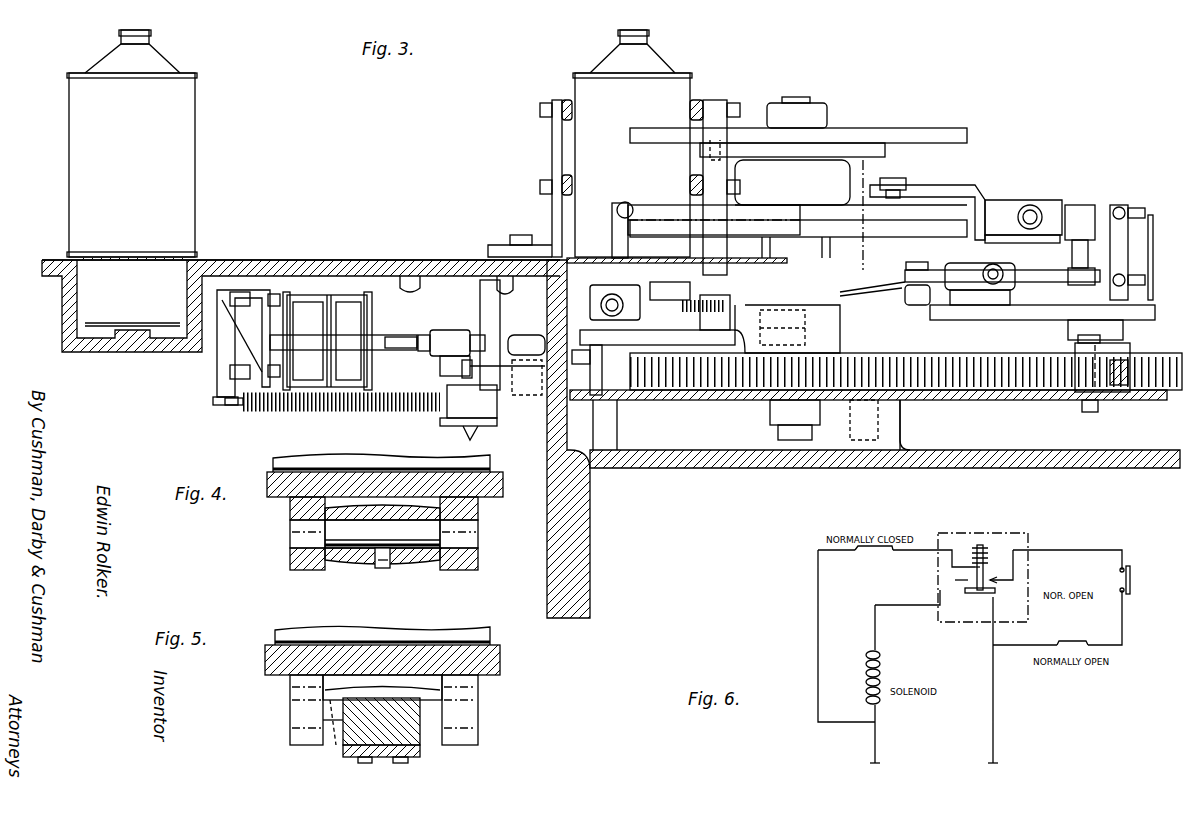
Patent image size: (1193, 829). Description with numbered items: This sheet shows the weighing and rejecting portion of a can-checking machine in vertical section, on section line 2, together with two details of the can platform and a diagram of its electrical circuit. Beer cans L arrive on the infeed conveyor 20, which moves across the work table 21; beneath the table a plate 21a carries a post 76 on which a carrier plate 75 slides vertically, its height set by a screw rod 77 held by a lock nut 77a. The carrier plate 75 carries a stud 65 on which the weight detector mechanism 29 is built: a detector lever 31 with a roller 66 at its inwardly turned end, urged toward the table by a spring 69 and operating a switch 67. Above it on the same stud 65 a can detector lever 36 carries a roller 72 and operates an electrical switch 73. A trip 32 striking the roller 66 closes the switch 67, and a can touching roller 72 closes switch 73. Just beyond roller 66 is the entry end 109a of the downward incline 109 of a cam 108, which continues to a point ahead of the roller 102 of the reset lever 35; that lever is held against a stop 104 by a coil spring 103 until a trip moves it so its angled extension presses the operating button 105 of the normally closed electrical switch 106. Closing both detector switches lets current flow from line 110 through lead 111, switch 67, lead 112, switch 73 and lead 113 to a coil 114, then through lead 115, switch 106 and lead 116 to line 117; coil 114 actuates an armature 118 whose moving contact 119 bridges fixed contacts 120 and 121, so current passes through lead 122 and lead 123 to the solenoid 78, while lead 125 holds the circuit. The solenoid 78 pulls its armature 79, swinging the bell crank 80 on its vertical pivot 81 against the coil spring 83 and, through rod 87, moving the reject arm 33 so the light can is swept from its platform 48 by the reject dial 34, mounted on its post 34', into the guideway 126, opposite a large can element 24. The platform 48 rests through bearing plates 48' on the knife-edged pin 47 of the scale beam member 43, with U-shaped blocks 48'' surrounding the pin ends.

In FIG. 3, the infeed conveyor 20 is at (165, 262).
In FIG. 3, the section line 2 is at (179, 293).
In FIG. 3, the work table 21 is at (314, 272).
In FIG. 3, the beer cans L is at (662, 98).
In FIG. 3, the guideway 126 is at (552, 107).
In FIG. 3, the post 34' is at (715, 177).
In FIG. 3, the reject dial 34 is at (798, 182).
In FIG. 3, the reject arm 33 is at (627, 205).
In FIG. 3, the roller 72 is at (905, 186).
In FIG. 3, the can detector lever 36 is at (963, 195).
In FIG. 3, the weight detector mechanism 29 is at (1026, 203).
In FIG. 6, the weight detector mechanism 29 is at (1105, 552).
In FIG. 3, the electrical switch 73 is at (1072, 210).
In FIG. 6, the electrical switch 73 is at (1133, 578).
In FIG. 3, the stud 65 is at (1073, 250).
In FIG. 3, the spring 69 is at (1150, 280).
In FIG. 3, the carrier plate 75 is at (1150, 308).
In FIG. 3, the post 76 is at (1125, 322).
In FIG. 3, the screw rod 77 is at (1132, 342).
In FIG. 3, the lock nut 77a is at (1097, 410).
In FIG. 3, the switch 67 is at (975, 292).
In FIG. 6, the switch 67 is at (1065, 641).
In FIG. 3, the detector lever 31 is at (1052, 283).
In FIG. 3, the roller 66 is at (914, 305).
In FIG. 3, the downward incline 109 is at (882, 290).
In FIG. 3, the entry end 109a is at (905, 300).
In FIG. 3, the cam 108 is at (800, 297).
In FIG. 3, the roller 102 is at (790, 320).
In FIG. 3, the reset lever 35 is at (794, 337).
In FIG. 3, the electrical switch 106 is at (608, 285).
In FIG. 6, the electrical switch 106 is at (866, 556).
In FIG. 3, the operating button 105 is at (662, 284).
In FIG. 3, the stop 104 is at (706, 300).
In FIG. 3, the coil spring 103 is at (722, 310).
In FIG. 3, the solenoid 78 is at (355, 388).
In FIG. 6, the solenoid 78 is at (880, 676).
In FIG. 3, the armature 79 is at (378, 341).
In FIG. 3, the bell crank 80 is at (445, 350).
In FIG. 3, the coil spring 83 is at (288, 410).
In FIG. 3, the vertical pivot 81 is at (497, 312).
In FIG. 3, the rod 87 is at (535, 336).
In FIG. 3, the plate 21a is at (960, 398).
In FIG. 4, the platform 48 is at (394, 470).
In FIG. 4, the large can element 24 is at (268, 498).
In FIG. 5, the large can element 24 is at (492, 662).
In FIG. 4, the bearing plates 48' is at (402, 508).
In FIG. 5, the bearing plates 48' is at (402, 710).
In FIG. 4, the U-shaped blocks 48'' is at (404, 557).
In FIG. 5, the U-shaped blocks 48'' is at (421, 710).
In FIG. 4, the pin 47 is at (383, 552).
In FIG. 5, the pin 47 is at (337, 725).
In FIG. 4, the scale beam member 43 is at (378, 570).
In FIG. 5, the scale beam member 43 is at (335, 747).
In FIG. 5, the trip 32 is at (420, 742).
In FIG. 6, the lead 115 is at (937, 548).
In FIG. 6, the coil 114 is at (985, 560).
In FIG. 6, the lead 113 is at (1035, 552).
In FIG. 6, the armature 118 is at (975, 567).
In FIG. 6, the lead 122 is at (1013, 565).
In FIG. 6, the fixed contact 121 is at (963, 577).
In FIG. 6, the fixed contact 120 is at (1010, 580).
In FIG. 6, the lead 123 is at (875, 603).
In FIG. 6, the moving contact 119 is at (965, 590).
In FIG. 6, the lead 125 is at (989, 638).
In FIG. 6, the lead 112 is at (1122, 638).
In FIG. 6, the lead 116 is at (818, 668).
In FIG. 6, the lead 111 is at (1022, 647).
In FIG. 6, the line 117 is at (875, 757).
In FIG. 6, the line 110 is at (994, 757).